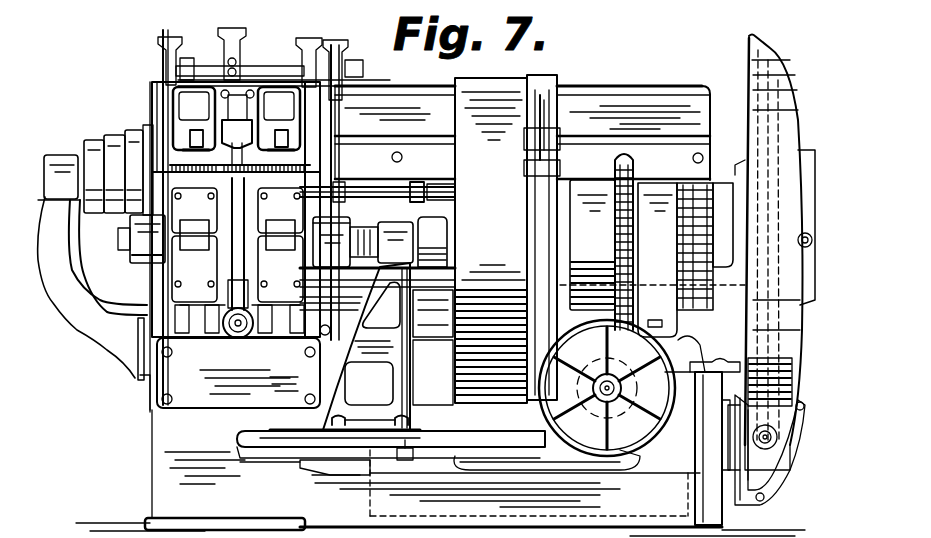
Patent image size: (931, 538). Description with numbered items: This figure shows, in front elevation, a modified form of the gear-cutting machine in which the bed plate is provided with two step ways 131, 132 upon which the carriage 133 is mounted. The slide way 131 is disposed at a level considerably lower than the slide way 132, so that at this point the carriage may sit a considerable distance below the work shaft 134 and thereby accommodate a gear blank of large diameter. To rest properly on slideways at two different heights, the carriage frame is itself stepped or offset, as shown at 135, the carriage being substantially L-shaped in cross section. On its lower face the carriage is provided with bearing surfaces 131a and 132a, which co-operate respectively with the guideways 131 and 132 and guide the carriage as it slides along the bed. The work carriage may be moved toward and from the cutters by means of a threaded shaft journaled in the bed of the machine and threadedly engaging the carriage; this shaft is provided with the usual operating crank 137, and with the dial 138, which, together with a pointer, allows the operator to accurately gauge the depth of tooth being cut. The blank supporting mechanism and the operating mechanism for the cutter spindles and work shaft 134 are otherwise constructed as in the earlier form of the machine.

The step way 131 is at (408, 452).
The bearing surface 131a is at (365, 470).
The step way 132 is at (690, 360).
The bearing surface 132a is at (686, 364).
The carriage 133 is at (470, 436).
The work shaft 134 is at (364, 234).
The stepped or offset portion of carriage frame 135 is at (615, 452).
The operating crank 137 is at (592, 468).
The dial 138 is at (542, 408).